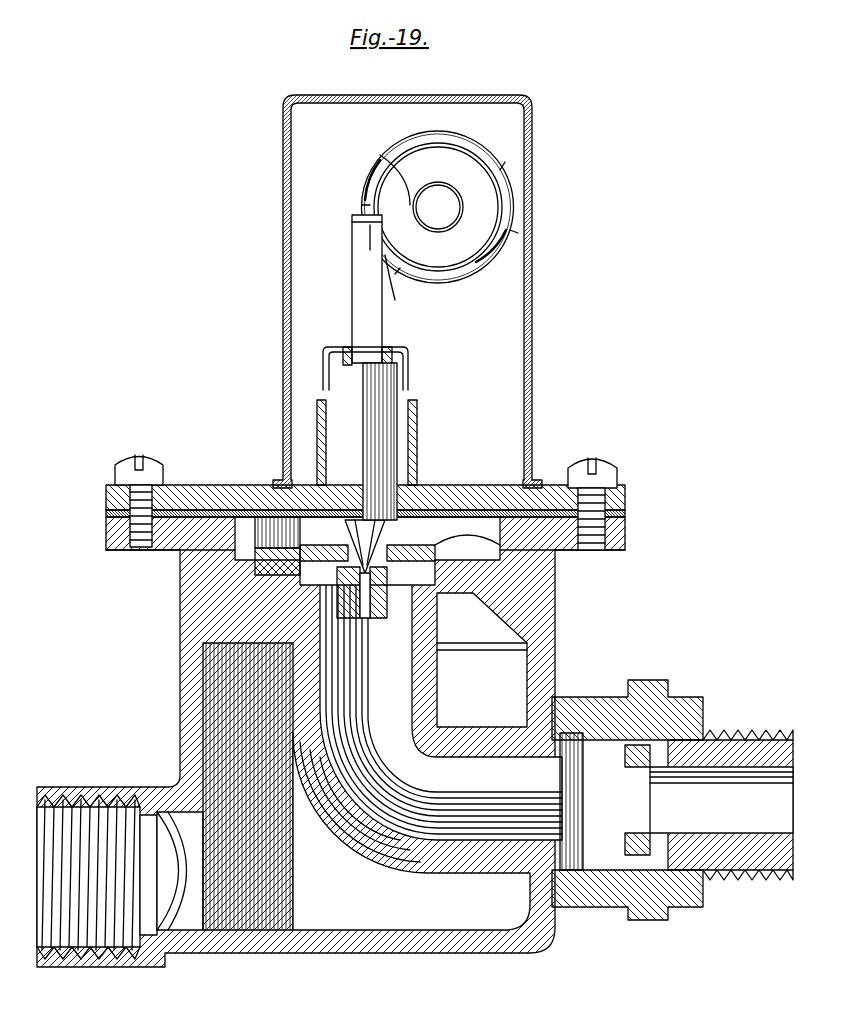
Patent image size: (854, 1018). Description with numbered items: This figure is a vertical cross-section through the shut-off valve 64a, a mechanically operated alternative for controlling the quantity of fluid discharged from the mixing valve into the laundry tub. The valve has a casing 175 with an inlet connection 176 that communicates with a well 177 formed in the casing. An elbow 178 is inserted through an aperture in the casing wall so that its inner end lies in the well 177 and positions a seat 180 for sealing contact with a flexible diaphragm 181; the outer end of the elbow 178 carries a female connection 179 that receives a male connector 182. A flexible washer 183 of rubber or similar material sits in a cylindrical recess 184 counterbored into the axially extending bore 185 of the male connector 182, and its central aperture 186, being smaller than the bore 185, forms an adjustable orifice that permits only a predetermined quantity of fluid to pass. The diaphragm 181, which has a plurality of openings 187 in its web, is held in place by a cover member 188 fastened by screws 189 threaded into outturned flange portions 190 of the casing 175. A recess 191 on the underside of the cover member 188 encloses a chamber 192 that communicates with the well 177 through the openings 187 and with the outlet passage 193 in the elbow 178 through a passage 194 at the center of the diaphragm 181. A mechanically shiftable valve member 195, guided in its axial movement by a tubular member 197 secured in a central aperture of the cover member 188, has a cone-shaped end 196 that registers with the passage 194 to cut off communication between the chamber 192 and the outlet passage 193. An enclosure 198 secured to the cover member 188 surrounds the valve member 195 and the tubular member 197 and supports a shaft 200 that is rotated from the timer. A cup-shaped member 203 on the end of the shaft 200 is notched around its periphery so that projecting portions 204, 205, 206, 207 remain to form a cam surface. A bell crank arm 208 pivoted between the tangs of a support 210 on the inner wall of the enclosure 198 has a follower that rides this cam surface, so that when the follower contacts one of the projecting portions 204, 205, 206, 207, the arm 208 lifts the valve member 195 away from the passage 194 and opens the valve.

The shut-off valve 64a is at (542, 480).
The casing 175 is at (558, 665).
The inlet connection 176 is at (120, 800).
The well 177 is at (405, 940).
The elbow 178 is at (435, 720).
The female connection 179 is at (645, 690).
The seat 180 is at (425, 597).
The flexible diaphragm 181 is at (470, 560).
The male connector 182 is at (685, 905).
The flexible washer 183 is at (700, 728).
The recess 184 is at (610, 875).
The bore 185 is at (742, 830).
The central aperture 186 is at (645, 825).
The openings 187 is at (455, 545).
The cover member 188 is at (172, 490).
The screws 189 is at (618, 468).
The outturned flange portions 190 is at (615, 538).
The recess 191 is at (445, 520).
The chamber 192 is at (260, 540).
The outlet passage 193 is at (470, 868).
The passage 194 is at (370, 615).
The valve member 195 is at (380, 420).
The cone-shaped end 196 is at (355, 555).
The tubular member 197 is at (417, 450).
The enclosure 198 is at (530, 322).
The shaft 200 is at (450, 218).
The cup-shaped member 203 is at (380, 155).
The projecting portion 204 is at (365, 178).
The projecting portion 205 is at (411, 284).
The projecting portion 206 is at (490, 262).
The projecting portion 207 is at (500, 182).
The bell crank arm 208 is at (352, 325).
The support 210 is at (400, 347).